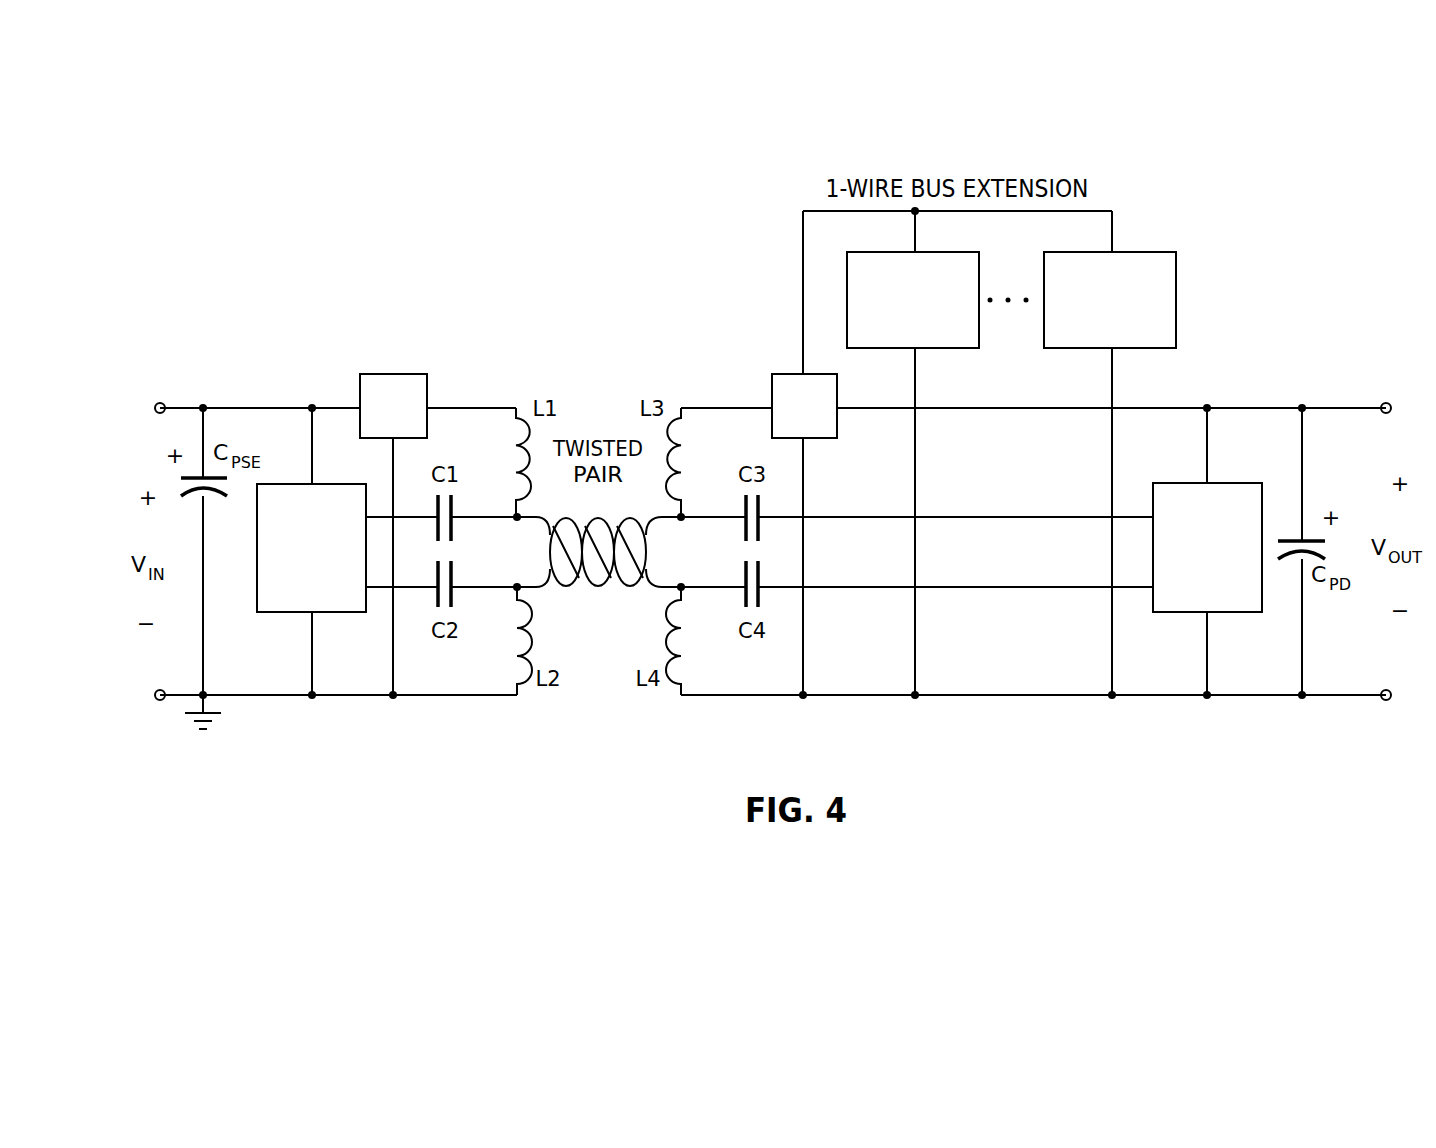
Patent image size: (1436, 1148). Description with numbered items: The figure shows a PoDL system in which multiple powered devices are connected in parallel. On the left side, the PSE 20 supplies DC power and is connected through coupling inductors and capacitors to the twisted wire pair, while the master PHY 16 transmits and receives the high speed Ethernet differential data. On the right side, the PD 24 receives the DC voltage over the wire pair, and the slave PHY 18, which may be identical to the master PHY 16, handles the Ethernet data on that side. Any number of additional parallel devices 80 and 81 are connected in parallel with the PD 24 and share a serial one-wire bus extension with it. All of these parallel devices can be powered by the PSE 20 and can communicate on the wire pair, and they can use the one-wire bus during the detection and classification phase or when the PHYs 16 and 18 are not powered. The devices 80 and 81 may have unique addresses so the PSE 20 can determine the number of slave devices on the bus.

The master PHY 16 is at (285, 613).
The slave PHY 18 is at (1233, 613).
The PSE 20 is at (387, 373).
The PD 24 is at (783, 373).
The parallel device 80 is at (937, 350).
The parallel device 81 is at (1137, 350).